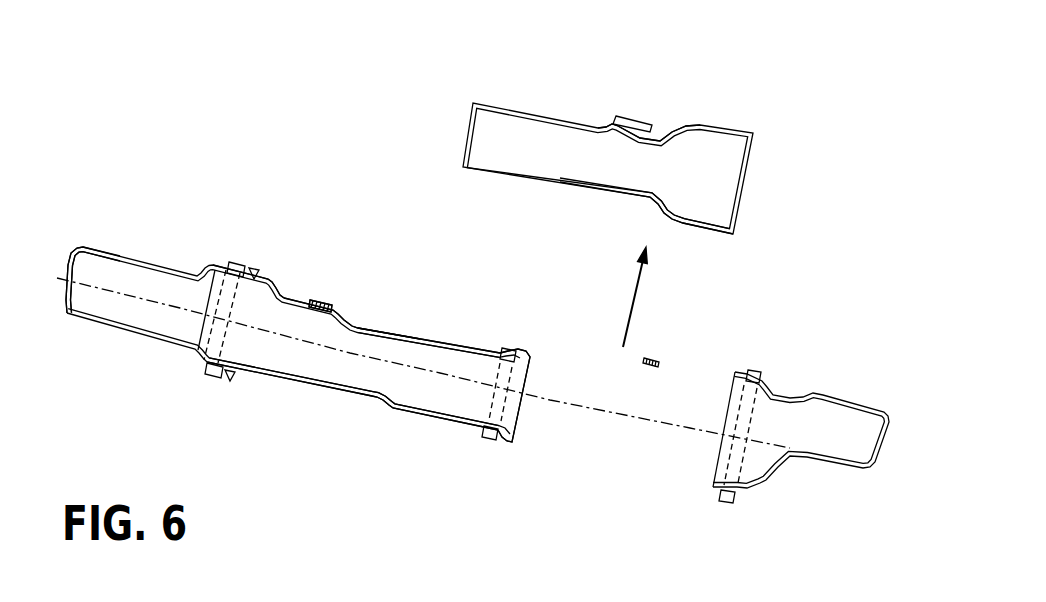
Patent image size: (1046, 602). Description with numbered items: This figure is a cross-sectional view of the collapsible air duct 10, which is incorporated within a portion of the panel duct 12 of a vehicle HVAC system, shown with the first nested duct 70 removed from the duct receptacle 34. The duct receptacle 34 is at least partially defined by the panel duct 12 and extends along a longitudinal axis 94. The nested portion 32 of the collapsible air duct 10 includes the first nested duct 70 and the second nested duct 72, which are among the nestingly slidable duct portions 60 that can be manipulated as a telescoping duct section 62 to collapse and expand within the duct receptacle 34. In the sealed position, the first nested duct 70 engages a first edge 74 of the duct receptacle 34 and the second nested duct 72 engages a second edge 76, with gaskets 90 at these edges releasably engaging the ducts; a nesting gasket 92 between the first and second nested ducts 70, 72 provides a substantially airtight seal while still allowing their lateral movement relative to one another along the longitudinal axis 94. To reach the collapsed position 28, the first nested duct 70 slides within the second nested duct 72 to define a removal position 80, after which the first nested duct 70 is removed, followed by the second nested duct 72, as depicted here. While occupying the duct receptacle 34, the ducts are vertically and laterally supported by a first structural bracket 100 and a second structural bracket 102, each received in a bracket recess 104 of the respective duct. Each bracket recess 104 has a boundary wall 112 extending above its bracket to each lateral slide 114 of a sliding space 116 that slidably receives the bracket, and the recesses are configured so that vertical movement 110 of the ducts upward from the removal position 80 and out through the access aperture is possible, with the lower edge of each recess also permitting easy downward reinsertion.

The collapsible air duct 10 is at (399, 99).
The panel duct 12 is at (142, 238).
The collapsed position 28 is at (519, 99).
The nested portion 32 is at (512, 486).
The duct receptacle 34 is at (772, 317).
The nestingly slidable duct portions 60 is at (277, 379).
The telescoping duct section 62 is at (420, 249).
The first nested duct 70 is at (594, 191).
The second nested duct 72 is at (365, 396).
The first edge 74 is at (710, 490).
The second edge 76 is at (243, 266).
The removal position 80 is at (411, 452).
The gaskets 90 is at (756, 370).
The nesting gasket 92 is at (510, 347).
The longitudinal axis 94 is at (107, 290).
The first structural bracket 100 is at (662, 363).
The second structural bracket 102 is at (317, 299).
The bracket recess 104 is at (338, 302).
The vertical movement 110 is at (630, 313).
The boundary wall 112 is at (659, 115).
The lateral slide 114 is at (284, 286).
The sliding space 116 is at (640, 115).